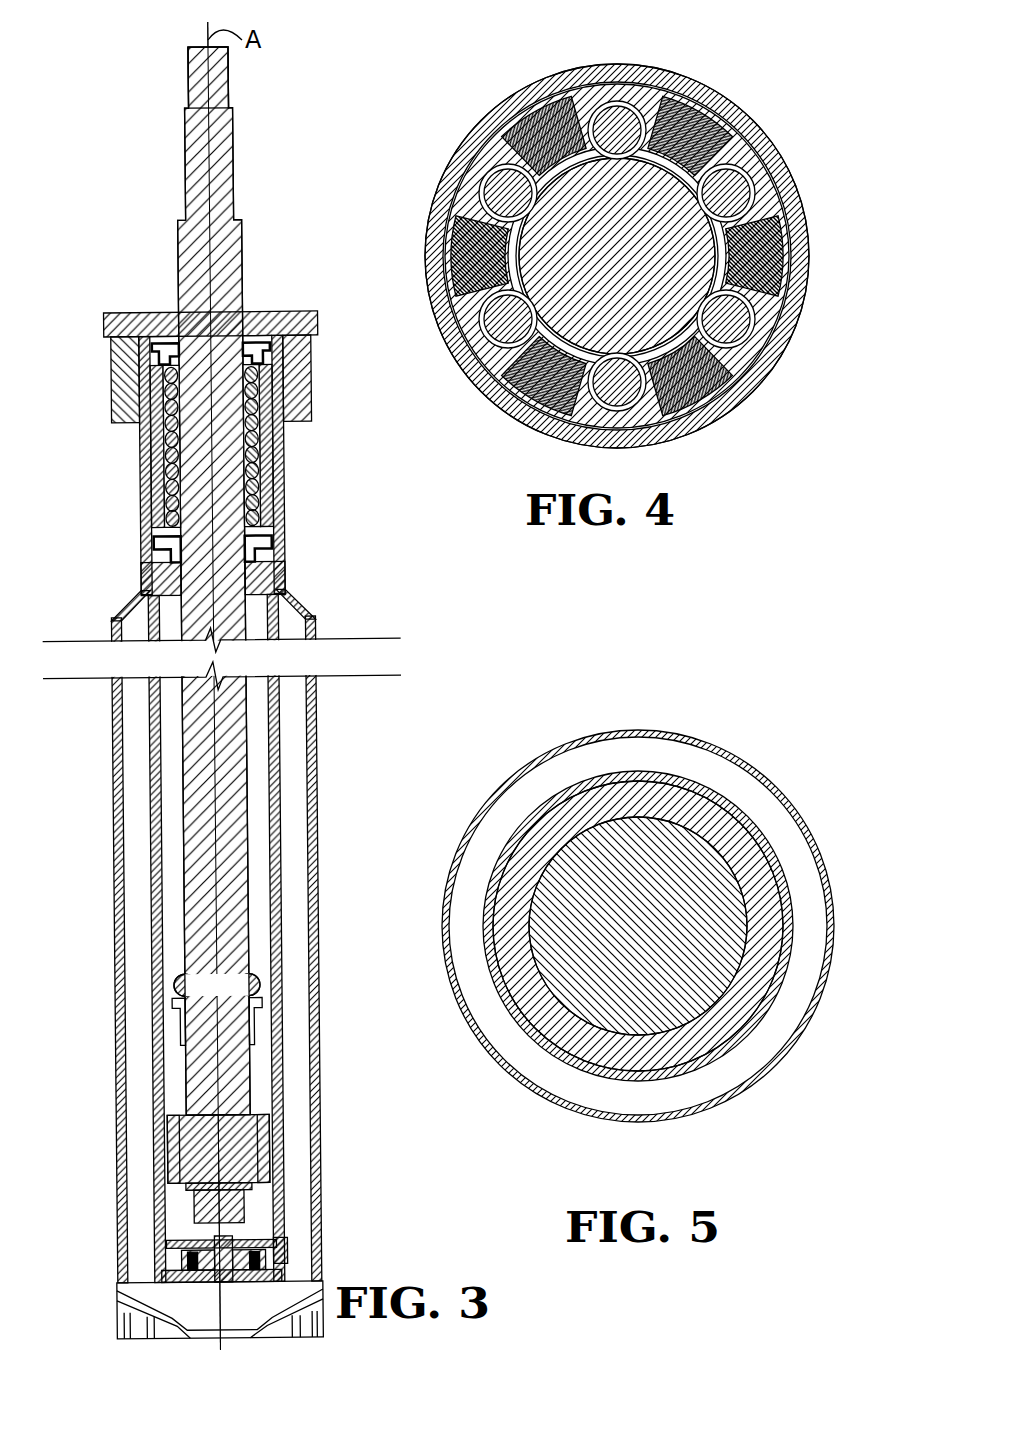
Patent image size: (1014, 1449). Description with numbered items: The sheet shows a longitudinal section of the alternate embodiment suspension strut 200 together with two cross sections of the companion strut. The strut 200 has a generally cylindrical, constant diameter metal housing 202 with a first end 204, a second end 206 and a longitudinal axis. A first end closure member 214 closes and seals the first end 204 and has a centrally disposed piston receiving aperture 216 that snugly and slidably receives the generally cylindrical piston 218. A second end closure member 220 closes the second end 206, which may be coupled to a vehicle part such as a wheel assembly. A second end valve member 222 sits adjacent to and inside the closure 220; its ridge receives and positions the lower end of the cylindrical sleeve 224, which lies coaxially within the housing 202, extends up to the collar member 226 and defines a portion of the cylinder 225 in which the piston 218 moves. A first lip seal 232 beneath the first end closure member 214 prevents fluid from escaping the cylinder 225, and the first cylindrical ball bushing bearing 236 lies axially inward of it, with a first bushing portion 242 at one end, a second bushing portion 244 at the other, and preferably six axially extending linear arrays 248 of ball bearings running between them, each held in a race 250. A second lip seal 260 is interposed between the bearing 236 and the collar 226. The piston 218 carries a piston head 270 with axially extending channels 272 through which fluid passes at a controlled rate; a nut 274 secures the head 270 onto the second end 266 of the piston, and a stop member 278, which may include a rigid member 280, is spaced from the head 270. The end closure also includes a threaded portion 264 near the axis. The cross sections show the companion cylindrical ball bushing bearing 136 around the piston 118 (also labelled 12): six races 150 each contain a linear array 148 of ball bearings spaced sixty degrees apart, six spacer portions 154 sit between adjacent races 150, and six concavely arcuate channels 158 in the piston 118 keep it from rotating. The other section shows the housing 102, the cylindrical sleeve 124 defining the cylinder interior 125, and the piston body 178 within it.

In FIG. 3, the suspension strut 200 is at (120, 158).
In FIG. 3, the shaft end 264 is at (190, 78).
In FIG. 3, the piston receiving aperture 216 is at (178, 312).
In FIG. 3, the first end closure member 214 is at (103, 305).
In FIG. 3, the first end 204 is at (96, 312).
In FIG. 3, the piston 218 is at (265, 302).
In FIG. 3, the first cylindrical ball bushing bearing 236 is at (138, 483).
In FIG. 3, the first bushing portion 242 is at (156, 383).
In FIG. 3, the sleeve 250 is at (275, 508).
In FIG. 3, the second bushing portion 244 is at (160, 530).
In FIG. 3, the linear arrays of ball bearing members 248 is at (252, 478).
In FIG. 3, the first lip seal 232 is at (152, 351).
In FIG. 3, the second lip seal 260 is at (252, 556).
In FIG. 3, the collar member 226 is at (160, 575).
In FIG. 3, the housing 202 is at (102, 768).
In FIG. 3, the cylinder 225 is at (138, 895).
In FIG. 3, the stop member 278 is at (178, 985).
In FIG. 3, the rigid member 280 is at (163, 1005).
In FIG. 3, the piston head 270 is at (205, 1157).
In FIG. 3, the axially extending channels 272 is at (168, 1115).
In FIG. 3, the nut 274 is at (190, 1205).
In FIG. 3, the cylindrical sleeve 224 is at (167, 1235).
In FIG. 3, the second end valve member 222 is at (168, 1258).
In FIG. 3, the second end of the piston 266 is at (272, 1250).
In FIG. 3, the second end 206 is at (110, 1352).
In FIG. 3, the second end closure member 220 is at (182, 1334).
In FIG. 4, the cylindrical ball bushing bearing 136 is at (462, 112).
In FIG. 4, the piston 118 is at (713, 109).
In FIG. 5, the piston 118 is at (667, 833).
In FIG. 4, the axially extending channels 158 is at (593, 72).
In FIG. 4, the spacer portions 154 is at (537, 86).
In FIG. 4, the linear arrays of ball bearing members 148 is at (755, 210).
In FIG. 4, the shaft 12 is at (503, 102).
In FIG. 4, the race 150 is at (653, 98).
In FIG. 5, the housing 102 is at (543, 756).
In FIG. 5, the cylinder interior 125 is at (613, 755).
In FIG. 5, the cylindrical sleeve 124 is at (645, 772).
In FIG. 5, the core 178 is at (737, 833).